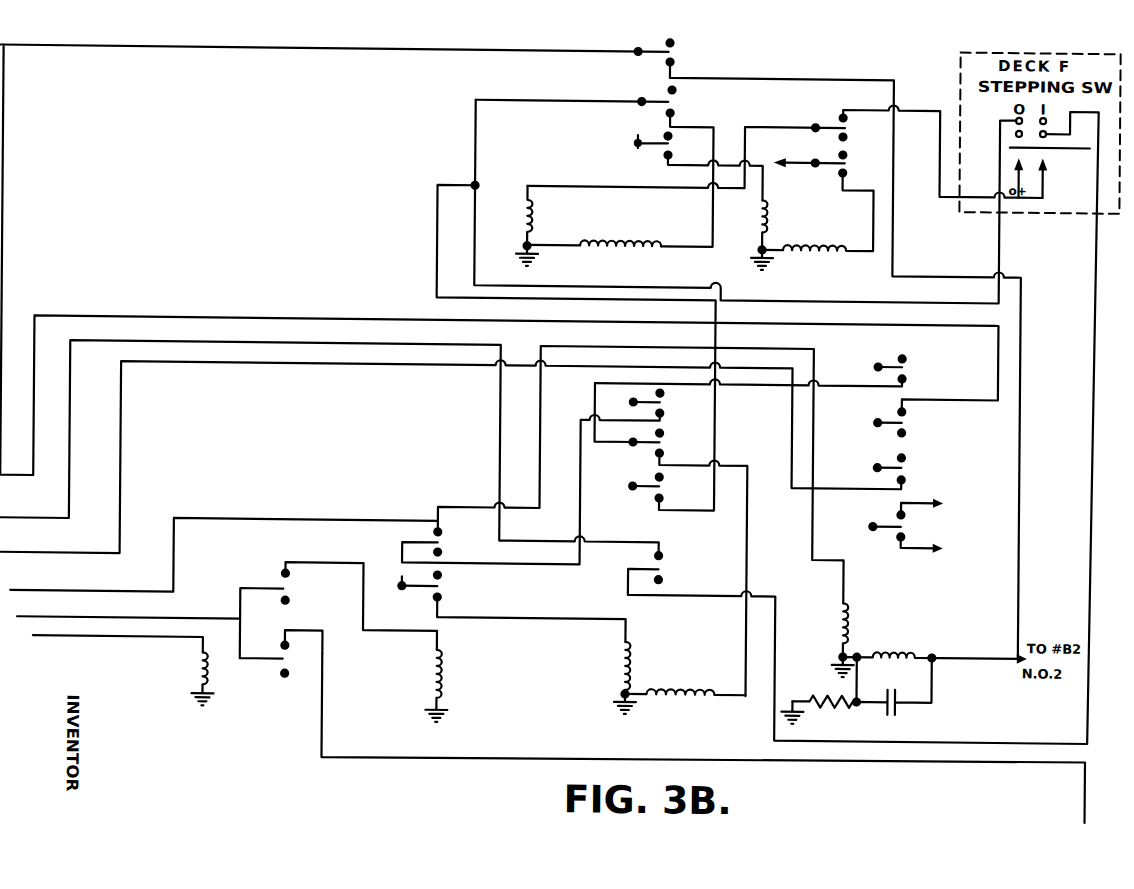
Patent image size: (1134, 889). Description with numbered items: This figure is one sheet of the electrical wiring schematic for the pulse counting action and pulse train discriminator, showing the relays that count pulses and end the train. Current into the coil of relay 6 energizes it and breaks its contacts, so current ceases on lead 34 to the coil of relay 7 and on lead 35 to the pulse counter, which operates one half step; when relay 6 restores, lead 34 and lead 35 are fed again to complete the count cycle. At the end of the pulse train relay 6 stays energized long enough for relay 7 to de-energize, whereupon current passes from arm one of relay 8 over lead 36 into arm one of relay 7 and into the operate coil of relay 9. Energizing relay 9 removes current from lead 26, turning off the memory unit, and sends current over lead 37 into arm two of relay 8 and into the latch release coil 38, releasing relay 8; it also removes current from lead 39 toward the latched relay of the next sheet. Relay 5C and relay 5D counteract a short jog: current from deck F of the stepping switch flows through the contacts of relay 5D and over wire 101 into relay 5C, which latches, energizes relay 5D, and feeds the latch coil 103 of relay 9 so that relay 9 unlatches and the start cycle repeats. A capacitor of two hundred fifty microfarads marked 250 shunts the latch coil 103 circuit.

The relay 5C is at (575, 226).
The relay 5D is at (801, 221).
The wire 101 is at (783, 116).
The relay 6 is at (200, 667).
The relay 7 is at (440, 676).
The relay 8 is at (627, 671).
The relay 9 is at (838, 626).
The lead 26 is at (980, 389).
The lead 34 is at (358, 559).
The lead 35 is at (389, 753).
The lead 36 is at (586, 521).
The lead 37 is at (857, 375).
The latch release coil 38 is at (672, 685).
The lead 39 is at (907, 493).
The latch coil 103 is at (882, 645).
The capacitor 250 MFD 250 is at (856, 698).